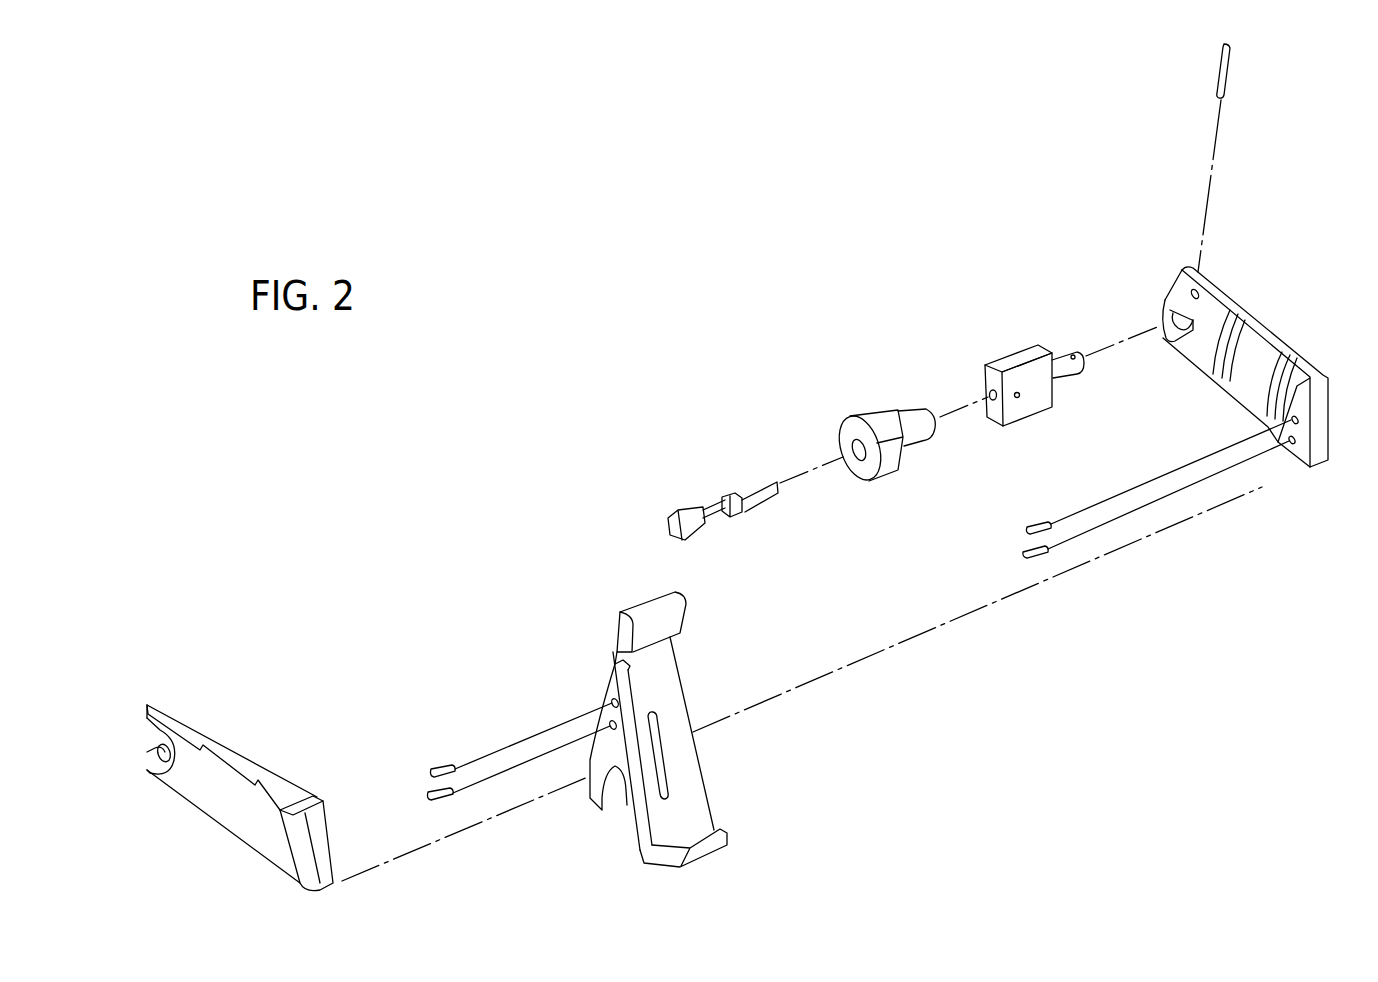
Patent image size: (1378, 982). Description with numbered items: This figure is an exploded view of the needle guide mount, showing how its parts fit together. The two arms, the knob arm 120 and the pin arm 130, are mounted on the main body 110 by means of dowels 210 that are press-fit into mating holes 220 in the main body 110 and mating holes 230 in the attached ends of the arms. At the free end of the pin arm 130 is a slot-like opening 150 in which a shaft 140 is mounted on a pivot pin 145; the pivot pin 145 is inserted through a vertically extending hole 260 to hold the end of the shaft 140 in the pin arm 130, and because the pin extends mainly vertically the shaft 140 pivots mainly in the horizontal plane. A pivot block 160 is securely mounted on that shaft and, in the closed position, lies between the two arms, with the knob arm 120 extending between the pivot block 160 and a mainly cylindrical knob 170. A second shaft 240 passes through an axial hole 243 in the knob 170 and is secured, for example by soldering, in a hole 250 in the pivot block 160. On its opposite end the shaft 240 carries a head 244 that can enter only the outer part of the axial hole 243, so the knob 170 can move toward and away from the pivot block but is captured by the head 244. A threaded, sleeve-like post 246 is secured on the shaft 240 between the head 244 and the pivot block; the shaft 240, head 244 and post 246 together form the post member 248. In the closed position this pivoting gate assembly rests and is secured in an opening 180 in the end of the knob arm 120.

The main body 110 is at (650, 592).
The knob arm 120 is at (223, 807).
The pin arm 130 is at (1260, 313).
The shaft 140 is at (1057, 350).
The pivot pin 145 is at (1229, 77).
The slot-like opening 150 is at (1176, 323).
The pivot block 160 is at (1003, 362).
The knob 170 is at (852, 415).
The opening 180 is at (158, 733).
The dowels 210 is at (430, 795).
The holes 220 is at (610, 724).
The holes 230 is at (1295, 422).
The shaft 240 is at (765, 500).
The axial hole 243 is at (863, 482).
The head 244 is at (682, 512).
The threaded sleeve-like post 246 is at (737, 497).
The post member 248 is at (730, 555).
The hole 250 is at (992, 400).
The vertically extending hole 260 is at (1075, 352).